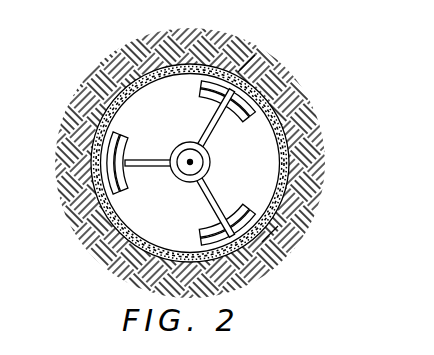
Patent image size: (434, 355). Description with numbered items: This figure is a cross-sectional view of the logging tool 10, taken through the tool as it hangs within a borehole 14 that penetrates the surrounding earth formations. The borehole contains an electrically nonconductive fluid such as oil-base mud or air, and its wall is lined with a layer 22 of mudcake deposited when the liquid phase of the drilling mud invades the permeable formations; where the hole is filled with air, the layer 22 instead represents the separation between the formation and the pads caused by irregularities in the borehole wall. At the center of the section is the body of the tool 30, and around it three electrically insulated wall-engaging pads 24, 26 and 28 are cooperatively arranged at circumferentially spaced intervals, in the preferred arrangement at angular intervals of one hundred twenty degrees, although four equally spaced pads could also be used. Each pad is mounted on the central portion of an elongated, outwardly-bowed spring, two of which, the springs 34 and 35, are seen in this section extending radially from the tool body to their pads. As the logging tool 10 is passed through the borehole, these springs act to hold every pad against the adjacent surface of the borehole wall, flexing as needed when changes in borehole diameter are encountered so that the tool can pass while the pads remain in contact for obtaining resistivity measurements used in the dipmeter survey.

The logging tool 10 is at (158, 208).
The borehole 14 is at (270, 143).
The mudcake layer 22 is at (166, 78).
The wall-engaging pad 24 is at (267, 237).
The wall-engaging pad 26 is at (92, 174).
The wall-engaging pad 28 is at (238, 72).
The tool body 30 is at (211, 158).
The outwardly-bowed spring 34 is at (211, 201).
The outwardly-bowed spring 35 is at (141, 145).